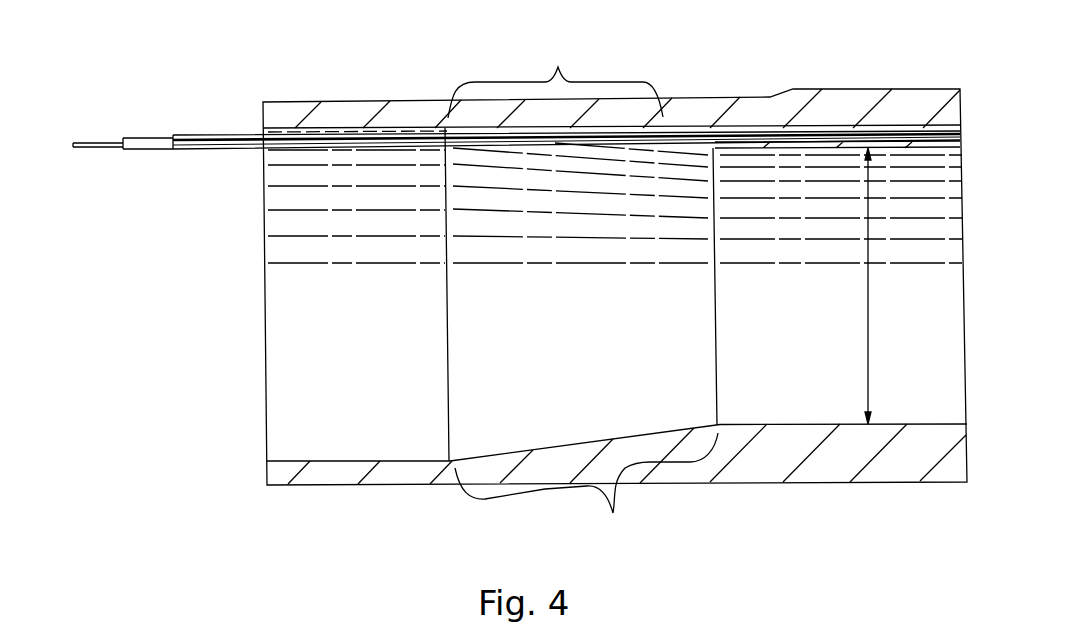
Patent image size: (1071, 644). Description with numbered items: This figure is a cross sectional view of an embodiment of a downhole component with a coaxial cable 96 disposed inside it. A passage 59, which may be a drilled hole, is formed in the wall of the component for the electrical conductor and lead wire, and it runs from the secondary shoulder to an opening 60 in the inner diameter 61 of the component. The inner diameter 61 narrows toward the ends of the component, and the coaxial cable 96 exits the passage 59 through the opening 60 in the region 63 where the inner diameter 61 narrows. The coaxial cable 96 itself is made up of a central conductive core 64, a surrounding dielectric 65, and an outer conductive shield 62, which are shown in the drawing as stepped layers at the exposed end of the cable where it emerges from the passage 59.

The passage 59 is at (900, 127).
The opening 60 is at (558, 67).
The inner diameter 61 is at (868, 298).
The conductive shield 62 is at (206, 136).
The region 63 is at (586, 493).
The conductive core 64 is at (97, 140).
The dielectric 65 is at (152, 137).
The coaxial cable 96 is at (202, 190).